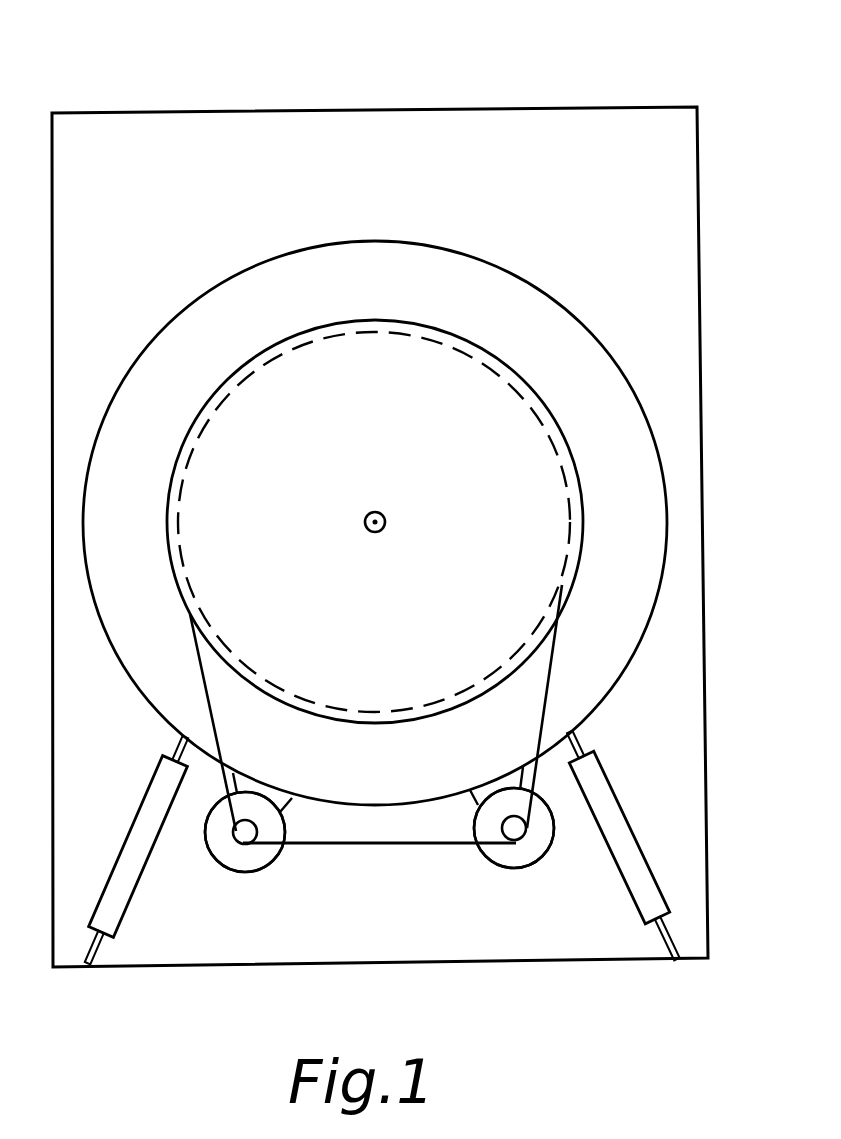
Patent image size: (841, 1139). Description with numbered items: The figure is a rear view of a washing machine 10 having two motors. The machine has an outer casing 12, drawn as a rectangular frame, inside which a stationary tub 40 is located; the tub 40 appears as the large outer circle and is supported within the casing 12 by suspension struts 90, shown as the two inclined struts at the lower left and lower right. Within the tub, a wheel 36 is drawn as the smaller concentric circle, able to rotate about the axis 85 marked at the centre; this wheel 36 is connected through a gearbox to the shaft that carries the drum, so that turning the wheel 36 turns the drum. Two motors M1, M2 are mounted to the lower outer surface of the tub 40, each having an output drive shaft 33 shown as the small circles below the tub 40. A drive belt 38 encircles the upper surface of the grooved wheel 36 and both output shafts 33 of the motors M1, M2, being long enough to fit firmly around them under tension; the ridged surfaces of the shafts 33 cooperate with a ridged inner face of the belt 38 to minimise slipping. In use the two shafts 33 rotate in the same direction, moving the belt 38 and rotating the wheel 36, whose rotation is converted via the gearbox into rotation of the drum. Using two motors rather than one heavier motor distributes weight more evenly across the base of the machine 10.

The washing machine 10 is at (651, 98).
The outer casing 12 is at (698, 214).
The output drive shaft 33 is at (232, 842).
The wheel 36 is at (310, 370).
The drive belt 38 is at (377, 845).
The tub 40 is at (642, 405).
The axis 85 is at (380, 518).
The suspension struts 90 is at (153, 790).
The first motor M1 is at (247, 862).
The second motor M2 is at (513, 858).